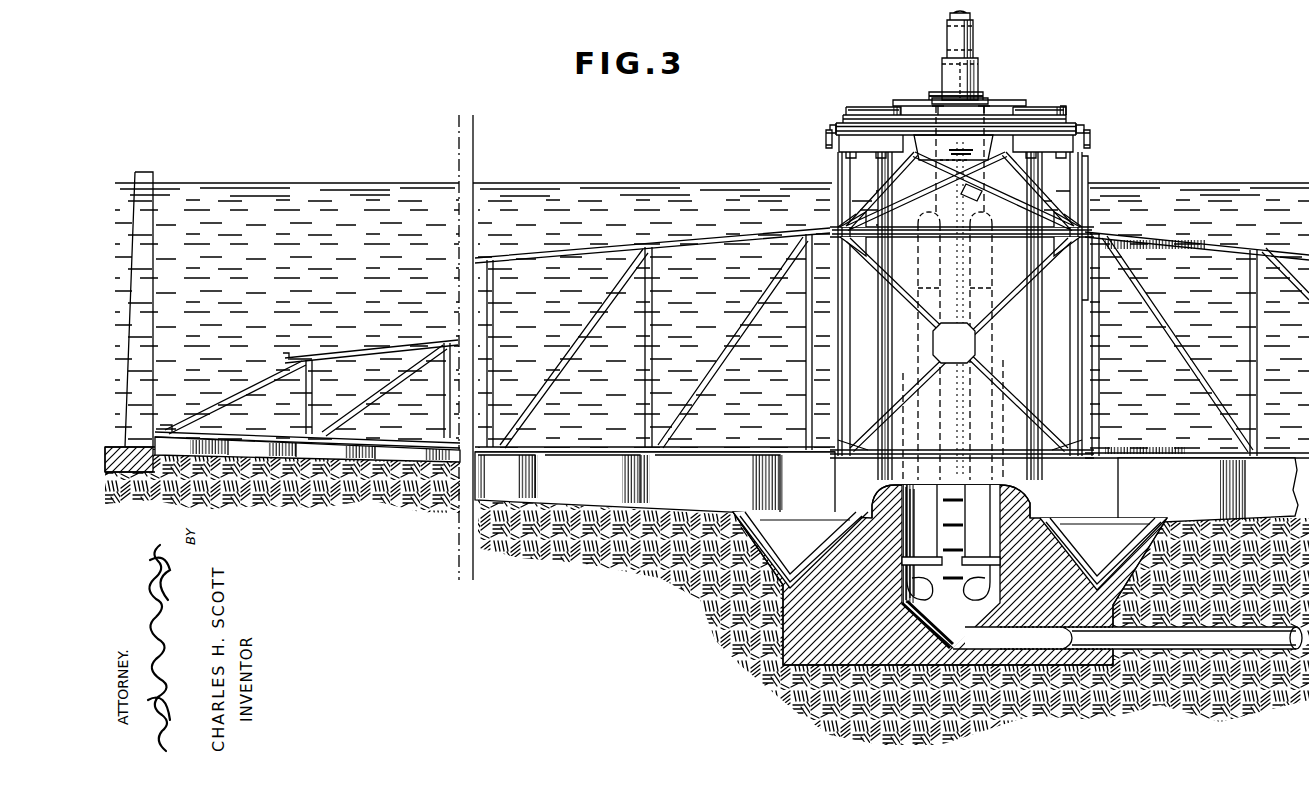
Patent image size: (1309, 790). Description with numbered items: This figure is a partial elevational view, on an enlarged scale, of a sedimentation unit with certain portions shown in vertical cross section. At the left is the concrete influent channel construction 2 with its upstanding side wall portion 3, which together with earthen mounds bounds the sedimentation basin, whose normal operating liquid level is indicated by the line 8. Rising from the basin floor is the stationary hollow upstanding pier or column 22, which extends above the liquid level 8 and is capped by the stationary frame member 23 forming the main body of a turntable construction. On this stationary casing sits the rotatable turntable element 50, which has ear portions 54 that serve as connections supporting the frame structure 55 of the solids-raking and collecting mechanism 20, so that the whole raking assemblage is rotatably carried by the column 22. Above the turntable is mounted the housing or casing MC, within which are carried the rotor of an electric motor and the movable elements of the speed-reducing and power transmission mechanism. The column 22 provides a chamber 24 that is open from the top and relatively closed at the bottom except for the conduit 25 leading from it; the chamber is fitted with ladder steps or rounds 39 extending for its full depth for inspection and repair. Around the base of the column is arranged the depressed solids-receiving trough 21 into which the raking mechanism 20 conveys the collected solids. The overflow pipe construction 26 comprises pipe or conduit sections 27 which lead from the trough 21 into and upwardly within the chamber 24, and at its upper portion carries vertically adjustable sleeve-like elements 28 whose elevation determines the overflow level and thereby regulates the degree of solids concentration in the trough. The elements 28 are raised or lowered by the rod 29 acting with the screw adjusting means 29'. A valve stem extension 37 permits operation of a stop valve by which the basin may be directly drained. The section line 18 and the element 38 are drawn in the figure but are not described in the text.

The concrete influent channel construction 2 is at (137, 447).
The upstanding side wall portion 3 is at (153, 174).
The normal operating liquid level line 8 is at (600, 190).
The section line 18 is at (835, 490).
The solids-raking and collecting mechanism 20 is at (386, 438).
The solids-receiving trough 21 is at (950, 551).
The hollow upstanding pier or column 22 is at (893, 368).
The stationary frame member 23 is at (1085, 132).
The chamber 24 is at (951, 542).
The conduit 25 is at (985, 638).
The overflow pipe construction 26 is at (928, 338).
The pipe or conduit sections 27 is at (905, 560).
The vertically adjustable sleeve-like elements 28 is at (920, 276).
The rod 29 is at (960, 302).
The screw adjusting means 29' is at (932, 92).
The valve stem extension 37 is at (978, 196).
The cross bar 38 is at (955, 141).
The ladder steps or rounds 39 is at (952, 496).
The rotatable turntable element 50 is at (1068, 120).
The ear portions 54 is at (830, 146).
The frame structure 55 is at (1088, 180).
The motor and transmission casing MC is at (968, 78).